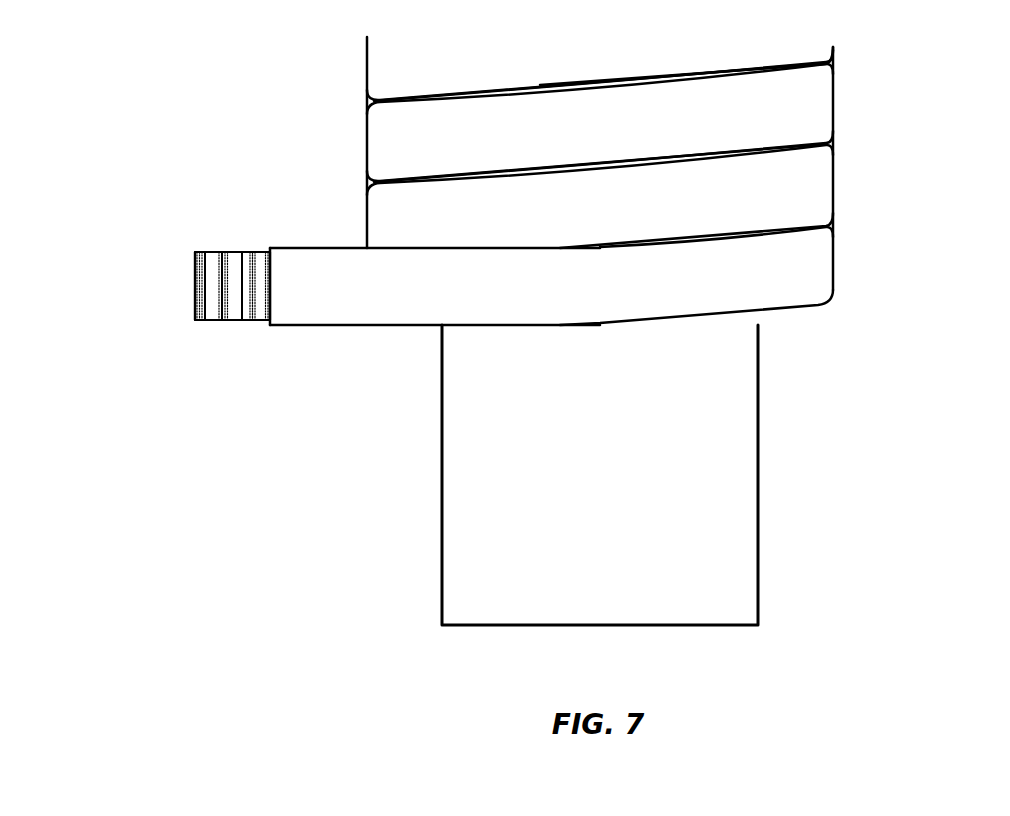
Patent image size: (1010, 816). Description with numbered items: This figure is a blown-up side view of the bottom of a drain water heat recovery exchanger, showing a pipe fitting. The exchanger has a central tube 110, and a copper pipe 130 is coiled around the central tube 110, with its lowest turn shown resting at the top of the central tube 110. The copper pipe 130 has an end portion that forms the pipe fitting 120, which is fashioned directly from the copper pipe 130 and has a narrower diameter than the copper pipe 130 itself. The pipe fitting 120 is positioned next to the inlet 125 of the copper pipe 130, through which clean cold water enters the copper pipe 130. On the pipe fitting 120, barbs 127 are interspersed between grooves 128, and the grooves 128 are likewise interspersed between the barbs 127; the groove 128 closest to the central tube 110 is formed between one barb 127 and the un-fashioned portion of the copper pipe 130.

The central tube 110 is at (697, 472).
The pipe fitting 120 is at (182, 340).
The inlet 125 is at (193, 293).
The barbs 127 is at (220, 250).
The grooves 128 is at (248, 250).
The copper pipe 130 is at (808, 265).